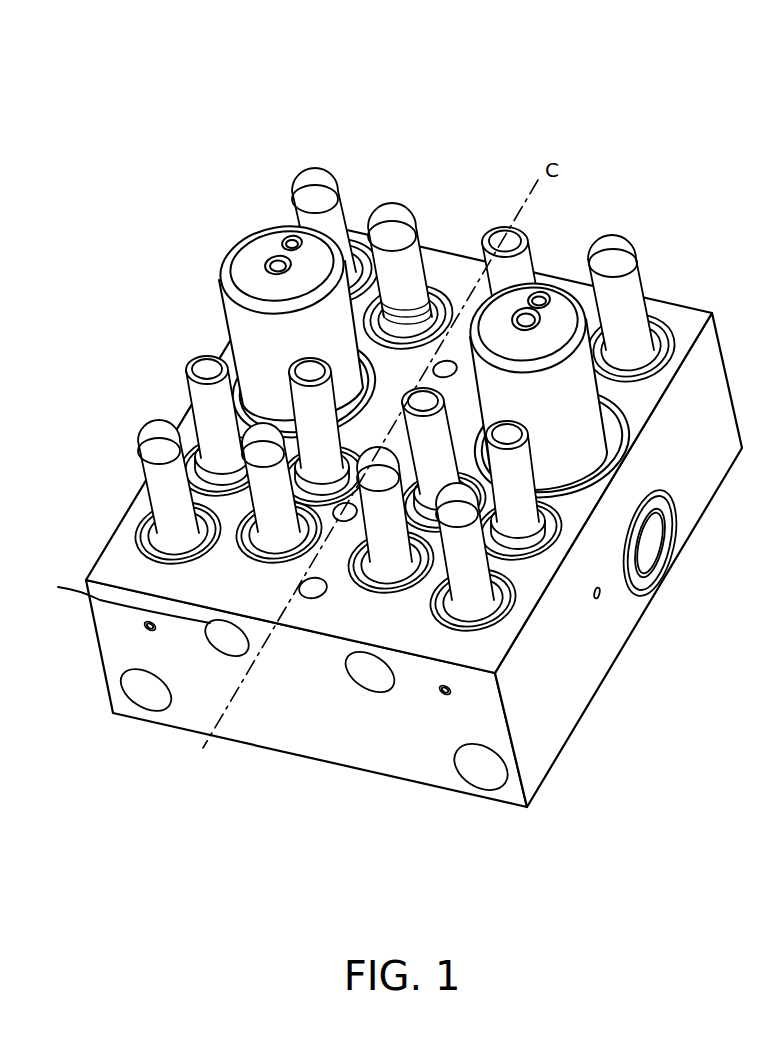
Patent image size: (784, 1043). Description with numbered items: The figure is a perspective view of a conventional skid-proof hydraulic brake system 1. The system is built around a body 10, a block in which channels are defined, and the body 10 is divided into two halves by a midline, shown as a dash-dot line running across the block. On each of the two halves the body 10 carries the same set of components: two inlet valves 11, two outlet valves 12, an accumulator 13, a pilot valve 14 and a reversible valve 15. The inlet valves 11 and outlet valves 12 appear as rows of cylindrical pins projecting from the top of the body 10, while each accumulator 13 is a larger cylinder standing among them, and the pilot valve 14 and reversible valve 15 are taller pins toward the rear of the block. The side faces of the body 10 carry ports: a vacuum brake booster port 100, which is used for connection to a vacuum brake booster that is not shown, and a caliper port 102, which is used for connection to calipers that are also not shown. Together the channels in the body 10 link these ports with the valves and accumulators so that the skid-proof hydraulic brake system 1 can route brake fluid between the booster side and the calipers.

The skid-proof hydraulic brake system 1 is at (423, 80).
The body 10 is at (378, 526).
The vacuum brake booster port 100 is at (110, 675).
The caliper port 102 is at (112, 597).
The inlet valve 11 is at (250, 443).
The outlet valve 12 is at (288, 358).
The accumulator 13 is at (237, 242).
The pilot valve 14 is at (313, 168).
The reversible valve 15 is at (395, 200).